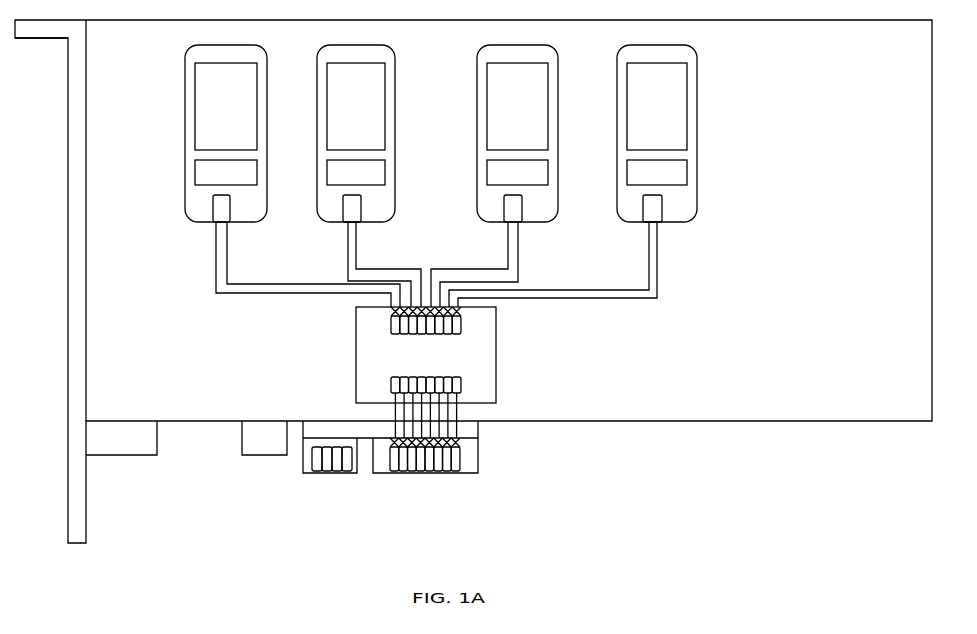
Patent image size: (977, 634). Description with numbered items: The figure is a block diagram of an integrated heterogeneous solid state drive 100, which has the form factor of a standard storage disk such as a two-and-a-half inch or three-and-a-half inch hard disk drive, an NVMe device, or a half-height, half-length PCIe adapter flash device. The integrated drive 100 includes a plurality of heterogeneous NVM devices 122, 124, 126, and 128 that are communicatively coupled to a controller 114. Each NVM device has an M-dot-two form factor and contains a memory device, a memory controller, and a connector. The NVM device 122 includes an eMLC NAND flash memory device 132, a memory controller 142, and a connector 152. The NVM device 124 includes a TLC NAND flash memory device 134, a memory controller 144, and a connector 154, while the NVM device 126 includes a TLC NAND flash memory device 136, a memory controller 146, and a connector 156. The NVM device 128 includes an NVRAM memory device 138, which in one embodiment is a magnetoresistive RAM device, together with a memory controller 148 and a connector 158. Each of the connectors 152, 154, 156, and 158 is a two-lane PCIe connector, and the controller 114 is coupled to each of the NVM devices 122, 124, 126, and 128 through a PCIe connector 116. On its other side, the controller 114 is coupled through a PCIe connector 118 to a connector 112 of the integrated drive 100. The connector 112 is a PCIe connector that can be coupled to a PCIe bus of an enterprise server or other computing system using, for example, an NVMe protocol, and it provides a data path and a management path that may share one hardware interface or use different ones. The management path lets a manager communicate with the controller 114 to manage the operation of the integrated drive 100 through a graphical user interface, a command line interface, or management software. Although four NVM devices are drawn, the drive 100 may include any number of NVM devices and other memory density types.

The integrated heterogeneous solid state drive 100 is at (633, 421).
The connector 112 is at (478, 462).
The controller 114 is at (496, 383).
The PCIe connector 116 is at (461, 325).
The PCIe connector 118 is at (391, 385).
The NVM device 122 is at (185, 70).
The NVM device 124 is at (317, 57).
The NVM device 126 is at (477, 57).
The NVM device 128 is at (617, 57).
The eMLC NAND flash memory device 132 is at (185, 115).
The TLC NAND flash memory device 134 is at (327, 87).
The TLC NAND flash memory device 136 is at (487, 97).
The NVRAM memory device 138 is at (627, 97).
The memory controller 142 is at (195, 172).
The memory controller 144 is at (327, 170).
The memory controller 146 is at (487, 170).
The memory controller 148 is at (627, 170).
The connector 152 is at (213, 213).
The connector 154 is at (343, 213).
The connector 156 is at (504, 213).
The connector 158 is at (643, 213).